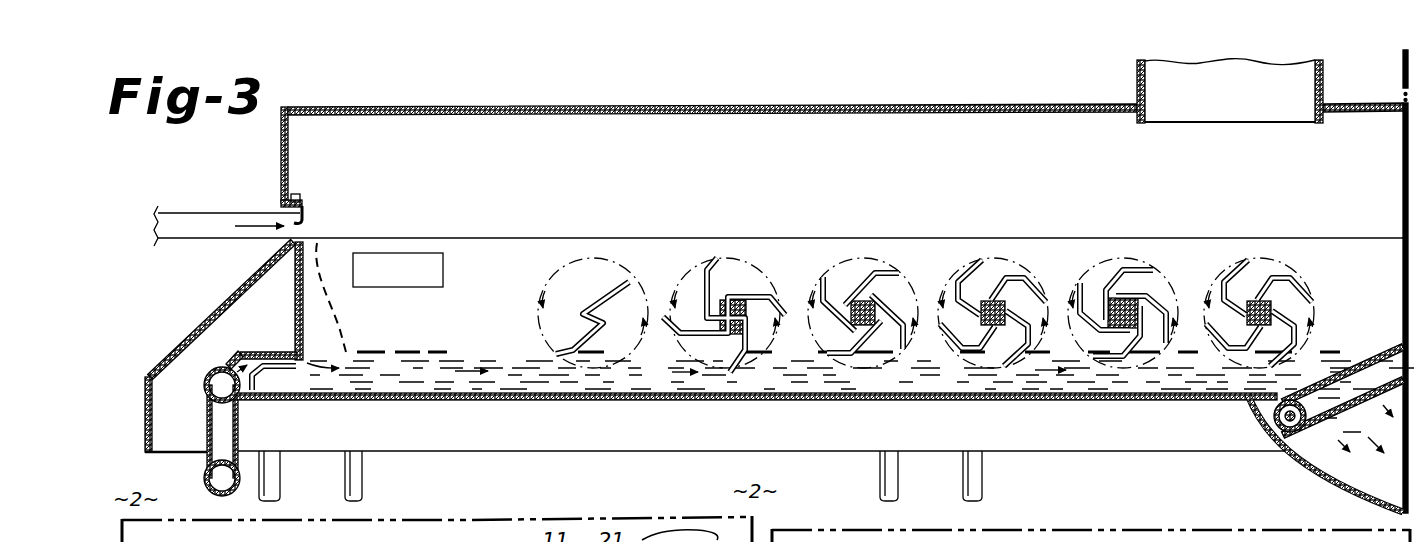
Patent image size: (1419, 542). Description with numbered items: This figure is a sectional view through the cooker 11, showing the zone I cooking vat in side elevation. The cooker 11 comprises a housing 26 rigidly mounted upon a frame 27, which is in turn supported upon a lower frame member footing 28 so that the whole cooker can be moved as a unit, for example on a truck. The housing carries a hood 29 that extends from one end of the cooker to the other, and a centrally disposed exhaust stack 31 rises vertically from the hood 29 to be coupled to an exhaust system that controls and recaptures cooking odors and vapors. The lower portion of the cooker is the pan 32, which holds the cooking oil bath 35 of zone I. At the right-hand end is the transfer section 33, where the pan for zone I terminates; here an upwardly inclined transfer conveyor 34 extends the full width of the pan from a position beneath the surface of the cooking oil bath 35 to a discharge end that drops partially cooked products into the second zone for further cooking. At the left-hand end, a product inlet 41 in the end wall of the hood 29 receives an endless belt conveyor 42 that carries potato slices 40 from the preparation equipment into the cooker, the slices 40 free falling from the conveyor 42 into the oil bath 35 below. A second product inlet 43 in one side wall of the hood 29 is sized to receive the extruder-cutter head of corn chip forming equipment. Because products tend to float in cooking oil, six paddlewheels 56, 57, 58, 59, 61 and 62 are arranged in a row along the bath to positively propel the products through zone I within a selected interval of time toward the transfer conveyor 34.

The cooker 11 is at (606, 105).
The housing 26 is at (624, 437).
The frame 27 is at (194, 329).
The lower frame member footing 28 is at (250, 423).
The hood 29 is at (934, 82).
The exhaust stack 31 is at (1137, 78).
The pan 32 is at (467, 401).
The transfer section 33 is at (1330, 477).
The transfer conveyor 34 is at (1372, 357).
The cooking oil bath 35 is at (530, 388).
The potato slices 40 is at (346, 334).
The product inlet 41 is at (308, 212).
The endless belt conveyor 42 is at (219, 189).
The second product inlet 43 is at (449, 264).
The paddlewheel 56 is at (626, 280).
The paddlewheel 57 is at (716, 258).
The paddlewheel 58 is at (883, 270).
The paddlewheel 59 is at (983, 265).
The paddlewheel 61 is at (1130, 273).
The paddlewheel 62 is at (1250, 258).